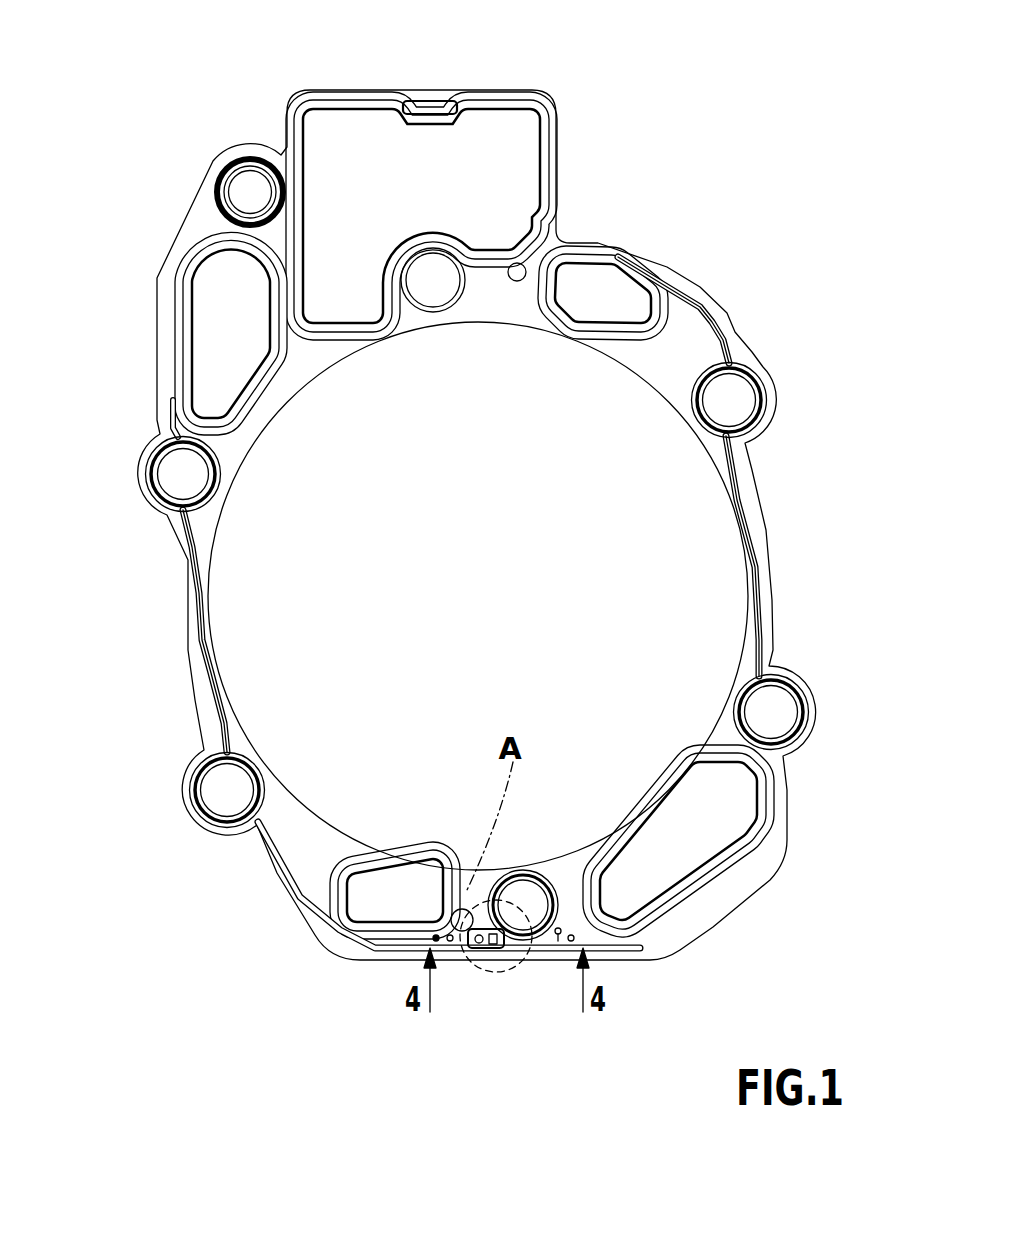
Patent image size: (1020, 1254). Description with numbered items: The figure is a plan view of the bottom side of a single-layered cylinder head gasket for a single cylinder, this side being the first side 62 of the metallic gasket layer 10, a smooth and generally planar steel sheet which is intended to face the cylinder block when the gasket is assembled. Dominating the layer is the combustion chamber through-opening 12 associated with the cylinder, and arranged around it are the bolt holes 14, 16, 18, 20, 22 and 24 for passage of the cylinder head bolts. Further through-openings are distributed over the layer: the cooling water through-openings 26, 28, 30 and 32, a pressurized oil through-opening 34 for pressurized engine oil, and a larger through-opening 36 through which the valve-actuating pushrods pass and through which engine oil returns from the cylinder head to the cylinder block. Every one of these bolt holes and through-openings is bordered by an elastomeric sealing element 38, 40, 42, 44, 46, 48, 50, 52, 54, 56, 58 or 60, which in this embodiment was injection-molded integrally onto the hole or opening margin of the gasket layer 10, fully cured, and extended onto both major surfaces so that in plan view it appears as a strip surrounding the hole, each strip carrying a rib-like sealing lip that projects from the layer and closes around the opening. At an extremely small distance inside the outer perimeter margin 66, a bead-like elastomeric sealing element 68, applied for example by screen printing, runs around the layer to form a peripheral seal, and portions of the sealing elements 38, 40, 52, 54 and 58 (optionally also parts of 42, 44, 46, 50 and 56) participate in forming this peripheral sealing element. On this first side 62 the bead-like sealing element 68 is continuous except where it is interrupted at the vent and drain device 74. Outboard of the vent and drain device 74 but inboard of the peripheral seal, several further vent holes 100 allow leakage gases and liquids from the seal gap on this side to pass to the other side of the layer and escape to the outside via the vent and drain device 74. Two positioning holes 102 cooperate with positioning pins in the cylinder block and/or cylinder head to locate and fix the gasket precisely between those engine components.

The metallic gasket layer 10 is at (296, 820).
The combustion chamber through-opening 12 is at (222, 626).
The bolt hole 14 is at (226, 797).
The bolt hole 16 is at (180, 477).
The bolt hole 18 is at (436, 300).
The bolt hole 20 is at (740, 407).
The bolt hole 22 is at (783, 713).
The bolt hole 24 is at (524, 895).
The cooling water through-opening 26 is at (353, 920).
The cooling water through-opening 28 is at (215, 282).
The cooling water through-opening 30 is at (585, 282).
The cooling water through-opening 32 is at (720, 820).
The pressurized oil through-opening 34 is at (243, 183).
The through-opening 36 is at (497, 147).
The elastomeric sealing element 38 is at (245, 757).
The elastomeric sealing element 40 is at (220, 487).
The elastomeric sealing element 42 is at (262, 382).
The elastomeric sealing element 44 is at (257, 168).
The elastomeric sealing element 46 is at (380, 108).
The elastomeric sealing element 48 is at (462, 303).
The elastomeric sealing element 50 is at (640, 283).
The elastomeric sealing element 52 is at (754, 374).
The elastomeric sealing element 54 is at (793, 678).
The elastomeric sealing element 56 is at (663, 810).
The elastomeric sealing element 58 is at (520, 878).
The elastomeric sealing element 60 is at (395, 900).
The first side 62 is at (677, 350).
The outer perimeter margin 66 is at (187, 653).
The bead-like elastomeric sealing element 68 is at (750, 510).
The vent and drain device 74 is at (490, 974).
The vent holes 100 is at (436, 941).
The positioning holes 102 is at (522, 268).